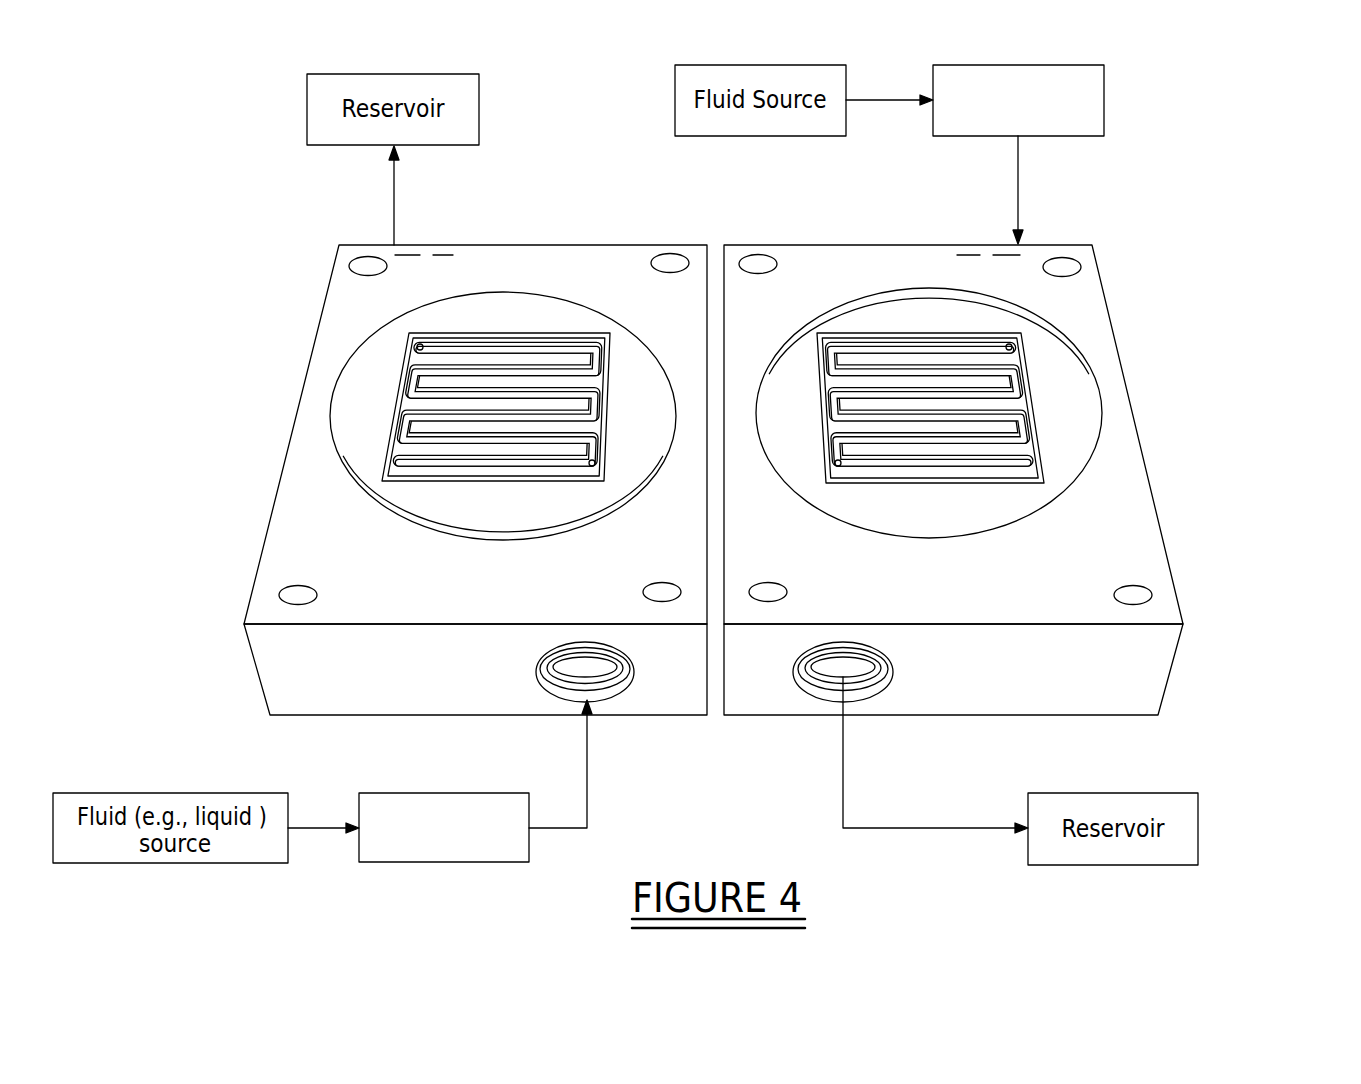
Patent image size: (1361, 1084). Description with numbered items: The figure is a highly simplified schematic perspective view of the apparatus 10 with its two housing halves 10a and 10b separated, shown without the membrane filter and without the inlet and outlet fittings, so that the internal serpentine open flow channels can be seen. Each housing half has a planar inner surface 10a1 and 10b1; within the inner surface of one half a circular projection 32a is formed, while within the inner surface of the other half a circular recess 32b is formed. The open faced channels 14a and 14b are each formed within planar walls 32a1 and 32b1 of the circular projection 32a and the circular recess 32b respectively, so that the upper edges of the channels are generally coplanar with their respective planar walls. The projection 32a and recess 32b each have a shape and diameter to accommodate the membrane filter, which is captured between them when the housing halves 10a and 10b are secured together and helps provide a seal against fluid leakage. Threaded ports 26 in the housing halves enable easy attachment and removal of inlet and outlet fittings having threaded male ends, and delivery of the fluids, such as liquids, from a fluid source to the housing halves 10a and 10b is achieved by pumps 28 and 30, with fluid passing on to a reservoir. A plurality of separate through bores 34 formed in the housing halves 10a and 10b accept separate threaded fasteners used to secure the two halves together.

The apparatus 10 is at (1198, 116).
The housing half 10a is at (335, 310).
The planar inner surface 10a1 is at (300, 528).
The housing half 10b is at (1089, 302).
The planar inner surface 10b1 is at (1128, 530).
The open faced channel 14a is at (598, 372).
The open faced channel 14b is at (834, 355).
The threaded port 26 is at (440, 254).
The pump 28 is at (402, 862).
The pump 30 is at (1104, 103).
The circular projection 32a is at (360, 456).
The planar wall 32a1 is at (375, 364).
The circular recess 32b is at (1070, 457).
The planar wall 32b1 is at (1057, 367).
The through bore 34 is at (368, 265).